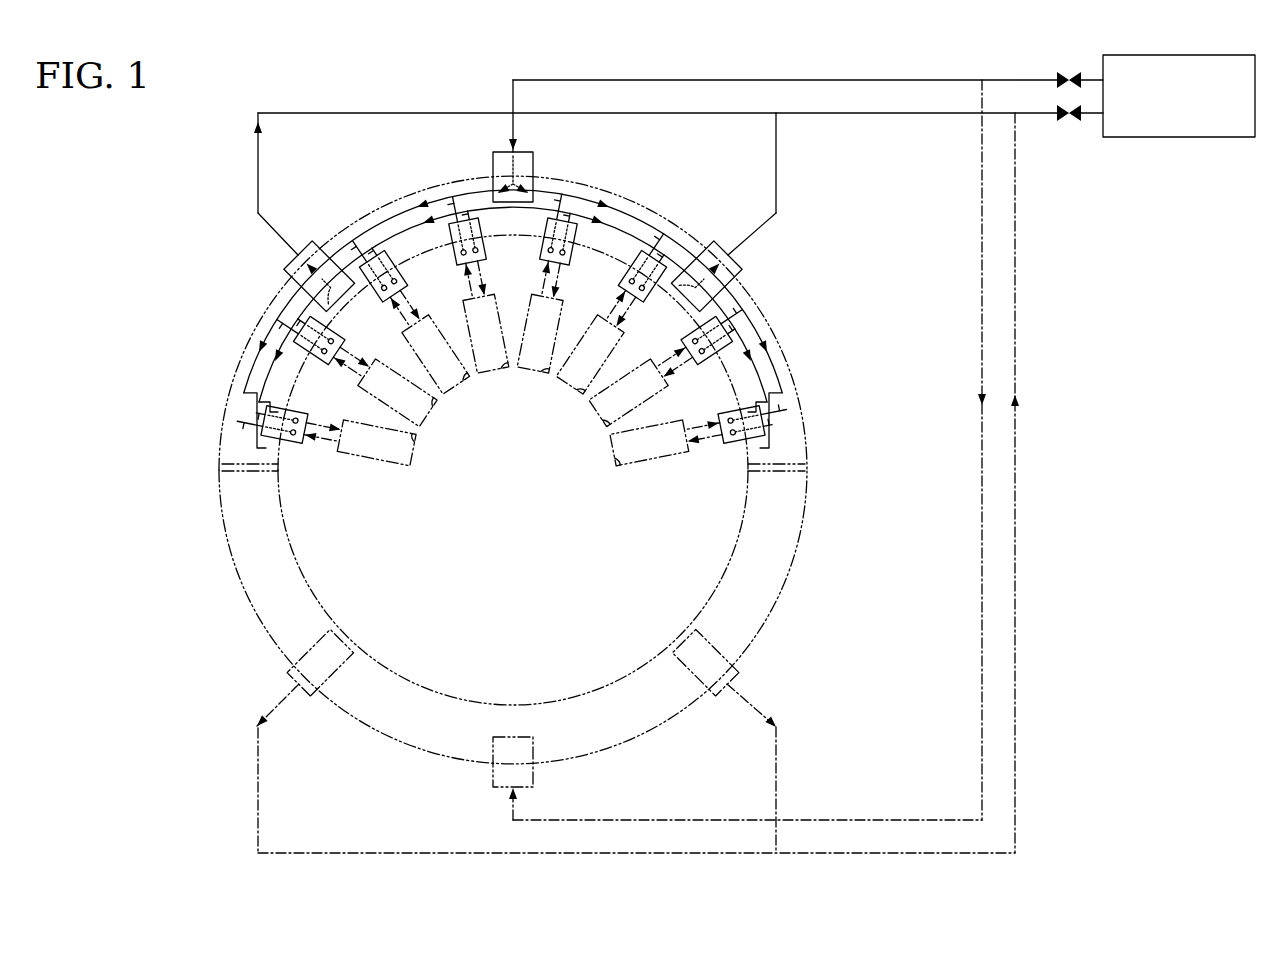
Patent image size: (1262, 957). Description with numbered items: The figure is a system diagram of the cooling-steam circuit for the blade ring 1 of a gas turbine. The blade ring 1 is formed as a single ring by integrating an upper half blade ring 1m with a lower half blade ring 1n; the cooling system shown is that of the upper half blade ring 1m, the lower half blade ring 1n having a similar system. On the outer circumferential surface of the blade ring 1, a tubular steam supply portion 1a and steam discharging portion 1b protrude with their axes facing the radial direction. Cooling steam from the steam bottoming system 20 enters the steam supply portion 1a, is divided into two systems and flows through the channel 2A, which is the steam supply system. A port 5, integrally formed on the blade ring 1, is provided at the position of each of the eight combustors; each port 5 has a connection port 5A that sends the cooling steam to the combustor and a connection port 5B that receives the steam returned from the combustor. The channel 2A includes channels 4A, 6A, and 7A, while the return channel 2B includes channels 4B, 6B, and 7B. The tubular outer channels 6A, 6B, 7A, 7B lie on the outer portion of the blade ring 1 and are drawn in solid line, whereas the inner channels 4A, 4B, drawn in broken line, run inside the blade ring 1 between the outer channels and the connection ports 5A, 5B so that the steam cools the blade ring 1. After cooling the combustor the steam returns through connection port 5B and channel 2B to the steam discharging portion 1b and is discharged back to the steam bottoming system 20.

The blade ring 1 is at (466, 470).
The steam supply portion 1a is at (533, 160).
The steam discharging portion 1b is at (318, 244).
The upper half blade ring 1m is at (219, 371).
The lower half blade ring 1n is at (226, 602).
The channel (steam supply system) 2A is at (388, 214).
The channel (steam return system) 2B is at (358, 246).
The inner channel 4A is at (289, 408).
The inner channel 4B is at (284, 441).
The port 5 is at (297, 441).
The connection port 5A is at (294, 418).
The connection port 5B is at (293, 434).
The outer channel 6A is at (249, 426).
The outer channel 6B is at (260, 417).
The outer channel 7A is at (321, 438).
The outer channel 7B is at (323, 426).
The steam bottoming system 20 is at (1178, 140).